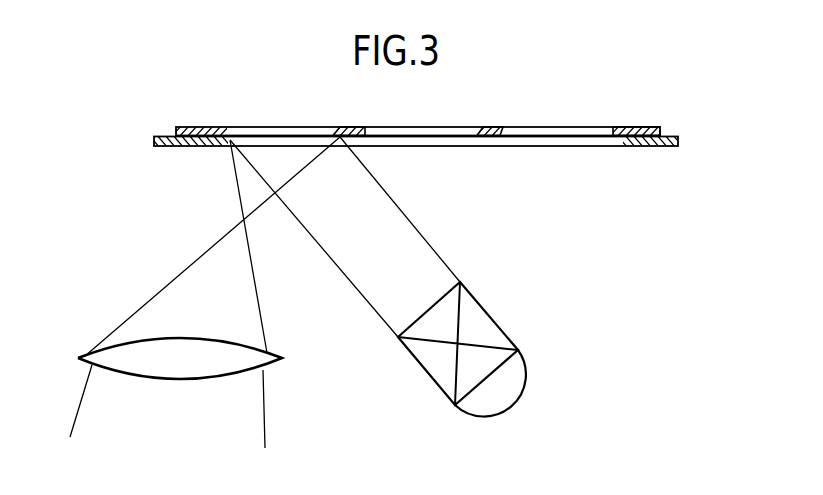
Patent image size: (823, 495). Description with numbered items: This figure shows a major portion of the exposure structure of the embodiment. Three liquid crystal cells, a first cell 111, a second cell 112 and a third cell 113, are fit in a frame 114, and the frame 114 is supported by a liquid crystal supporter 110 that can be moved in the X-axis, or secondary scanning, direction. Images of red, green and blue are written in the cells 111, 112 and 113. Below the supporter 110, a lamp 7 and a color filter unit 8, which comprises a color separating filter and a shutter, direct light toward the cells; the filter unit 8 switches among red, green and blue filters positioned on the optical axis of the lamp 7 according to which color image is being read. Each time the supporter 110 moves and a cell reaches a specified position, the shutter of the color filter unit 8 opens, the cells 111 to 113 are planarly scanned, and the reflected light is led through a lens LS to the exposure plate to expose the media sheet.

The liquid crystal supporter 110 is at (663, 150).
The first cell 111 is at (262, 127).
The second cell 112 is at (402, 127).
The third cell 113 is at (543, 128).
The frame 114 is at (648, 128).
The color filter unit 8 is at (483, 303).
The lamp 7 is at (507, 385).
The lens LS is at (213, 366).